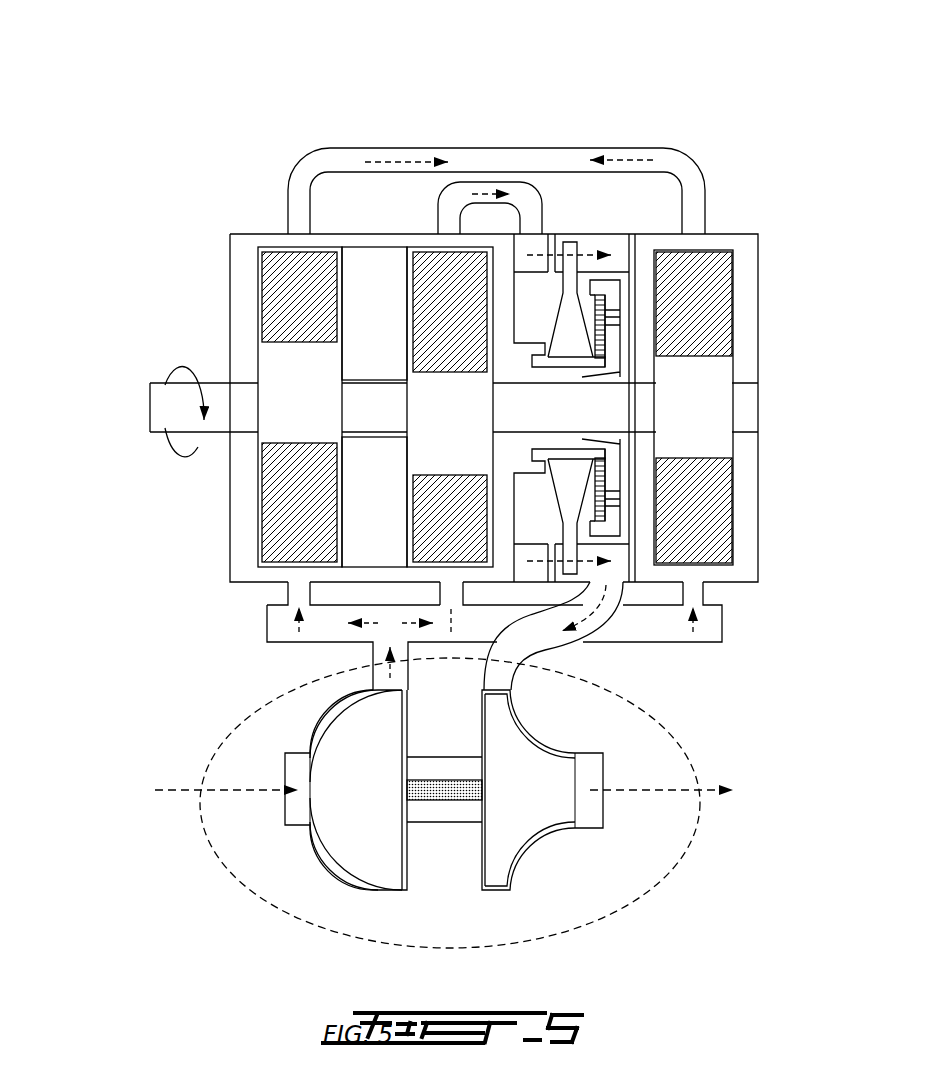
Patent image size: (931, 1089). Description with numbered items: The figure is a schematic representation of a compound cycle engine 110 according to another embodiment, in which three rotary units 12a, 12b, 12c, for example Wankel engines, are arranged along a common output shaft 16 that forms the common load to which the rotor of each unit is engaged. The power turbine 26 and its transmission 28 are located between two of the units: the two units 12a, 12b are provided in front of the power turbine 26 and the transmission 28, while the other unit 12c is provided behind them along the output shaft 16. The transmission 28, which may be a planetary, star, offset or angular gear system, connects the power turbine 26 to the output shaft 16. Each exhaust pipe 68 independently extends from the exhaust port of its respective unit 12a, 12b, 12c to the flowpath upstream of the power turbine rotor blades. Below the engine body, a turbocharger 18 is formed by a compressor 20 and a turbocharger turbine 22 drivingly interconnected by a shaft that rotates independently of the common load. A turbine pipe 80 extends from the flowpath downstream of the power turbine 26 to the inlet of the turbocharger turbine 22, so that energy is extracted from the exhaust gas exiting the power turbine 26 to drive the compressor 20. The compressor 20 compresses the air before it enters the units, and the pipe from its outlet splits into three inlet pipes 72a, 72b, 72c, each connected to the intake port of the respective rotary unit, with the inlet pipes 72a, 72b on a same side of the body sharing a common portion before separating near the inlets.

The compound cycle engine 110 is at (146, 156).
The rotary unit 12a is at (256, 242).
The rotary unit 12b is at (406, 242).
The rotary unit 12c is at (733, 239).
The output shaft 16 is at (160, 412).
The turbocharger 18 is at (310, 924).
The compressor 20 is at (361, 799).
The turbocharger turbine 22 is at (524, 809).
The power turbine 26 is at (561, 236).
The transmission 28 is at (624, 276).
The exhaust pipe 68 is at (620, 157).
The inlet pipe 72a is at (290, 588).
The inlet pipe 72b is at (447, 592).
The inlet pipe 72c is at (704, 586).
The turbine pipe 80 is at (543, 638).